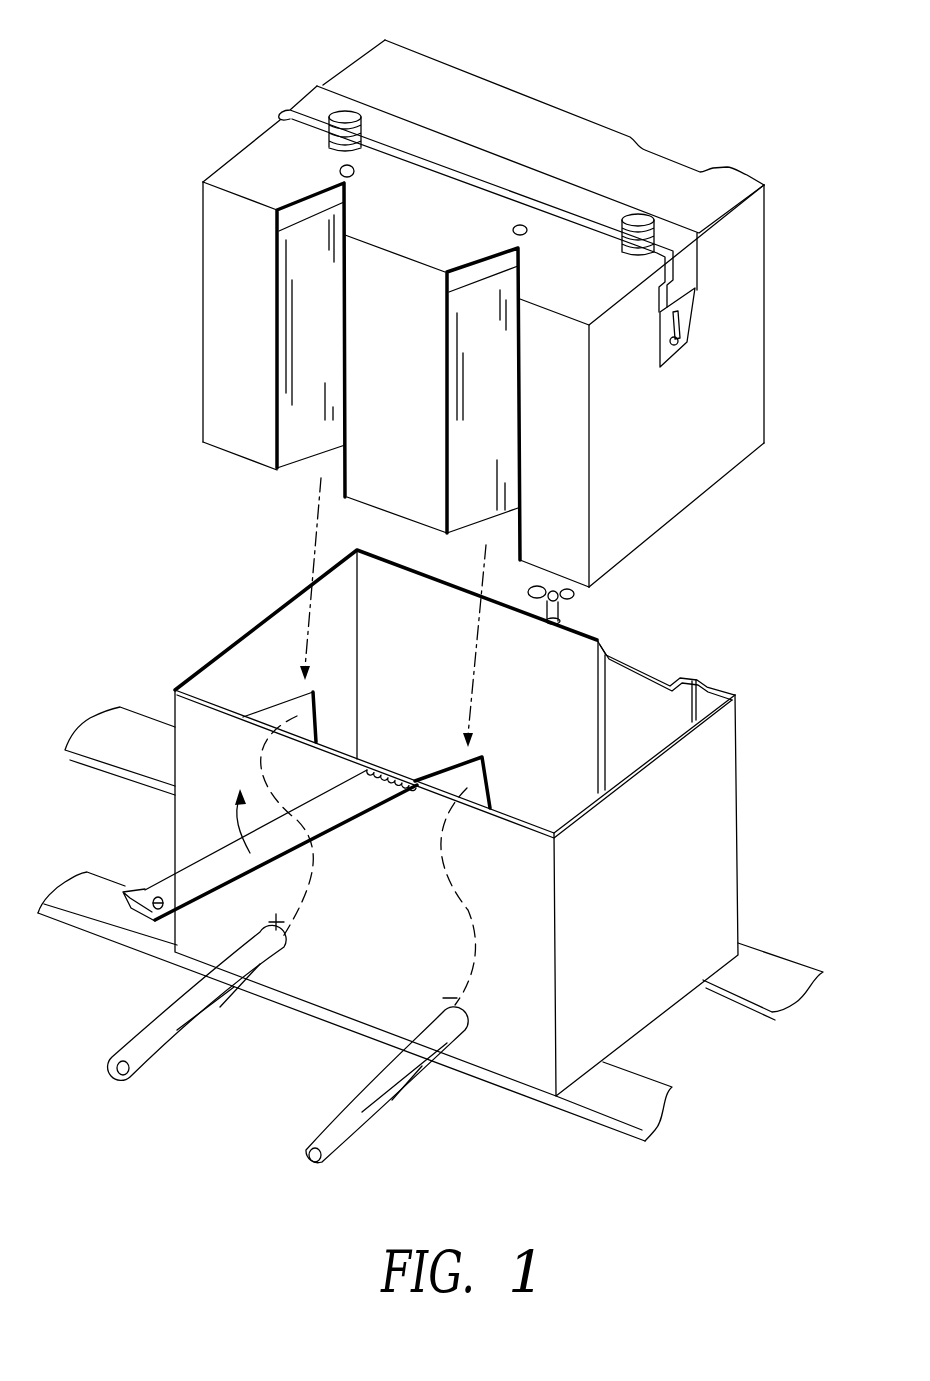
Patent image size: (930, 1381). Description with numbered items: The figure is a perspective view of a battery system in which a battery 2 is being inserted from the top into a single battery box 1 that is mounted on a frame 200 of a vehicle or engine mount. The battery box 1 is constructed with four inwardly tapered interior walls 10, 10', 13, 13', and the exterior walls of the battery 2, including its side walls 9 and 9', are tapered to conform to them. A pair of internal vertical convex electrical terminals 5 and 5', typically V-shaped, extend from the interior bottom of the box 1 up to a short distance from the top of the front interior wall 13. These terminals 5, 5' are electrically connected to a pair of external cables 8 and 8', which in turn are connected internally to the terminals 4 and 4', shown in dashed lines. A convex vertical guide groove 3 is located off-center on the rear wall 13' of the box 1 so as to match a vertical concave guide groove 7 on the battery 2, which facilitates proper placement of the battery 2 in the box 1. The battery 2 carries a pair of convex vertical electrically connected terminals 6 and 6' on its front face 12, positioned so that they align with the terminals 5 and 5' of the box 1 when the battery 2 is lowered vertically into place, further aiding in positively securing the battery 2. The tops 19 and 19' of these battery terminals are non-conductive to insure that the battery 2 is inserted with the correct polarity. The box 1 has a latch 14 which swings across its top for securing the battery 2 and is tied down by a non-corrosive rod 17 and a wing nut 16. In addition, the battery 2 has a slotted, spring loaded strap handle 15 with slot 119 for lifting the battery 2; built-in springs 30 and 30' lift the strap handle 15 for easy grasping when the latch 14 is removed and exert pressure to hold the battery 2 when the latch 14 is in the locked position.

The battery box 1 is at (688, 923).
The battery 2 is at (742, 287).
The convex vertical guide groove 3 is at (637, 700).
The terminal 4 is at (313, 828).
The terminal 4' is at (483, 896).
The internal vertical convex electrical terminal 5 is at (296, 709).
The internal vertical convex electrical terminal 5' is at (475, 766).
The convex vertical electrically connected terminal 6 is at (291, 475).
The convex vertical electrically connected terminal 6' is at (442, 533).
The vertical concave guide groove 7 is at (652, 152).
The external cable 8 is at (197, 1007).
The external cable 8' is at (367, 1085).
The side wall of battery 9 is at (177, 312).
The side wall of battery 9' is at (779, 314).
The interior wall 10 is at (375, 654).
The interior wall 10' is at (556, 780).
The front face 12 is at (229, 342).
The front interior wall 13 is at (332, 1025).
The rear wall 13' is at (605, 634).
The latch 14 is at (177, 887).
The spring loaded strap handle 15 is at (473, 162).
The wing nut 16 is at (575, 597).
The non-corrosive rod 17 is at (553, 618).
The top of battery terminal 19 is at (227, 279).
The top of battery terminal 19' is at (459, 366).
The built-in spring 30 is at (401, 91).
The built-in spring 30' is at (653, 191).
The slot 119 is at (677, 335).
The mounting rail 200 is at (762, 970).